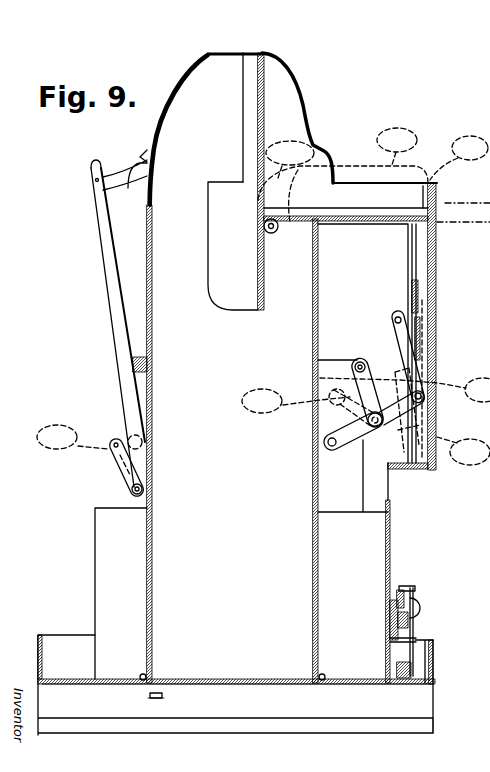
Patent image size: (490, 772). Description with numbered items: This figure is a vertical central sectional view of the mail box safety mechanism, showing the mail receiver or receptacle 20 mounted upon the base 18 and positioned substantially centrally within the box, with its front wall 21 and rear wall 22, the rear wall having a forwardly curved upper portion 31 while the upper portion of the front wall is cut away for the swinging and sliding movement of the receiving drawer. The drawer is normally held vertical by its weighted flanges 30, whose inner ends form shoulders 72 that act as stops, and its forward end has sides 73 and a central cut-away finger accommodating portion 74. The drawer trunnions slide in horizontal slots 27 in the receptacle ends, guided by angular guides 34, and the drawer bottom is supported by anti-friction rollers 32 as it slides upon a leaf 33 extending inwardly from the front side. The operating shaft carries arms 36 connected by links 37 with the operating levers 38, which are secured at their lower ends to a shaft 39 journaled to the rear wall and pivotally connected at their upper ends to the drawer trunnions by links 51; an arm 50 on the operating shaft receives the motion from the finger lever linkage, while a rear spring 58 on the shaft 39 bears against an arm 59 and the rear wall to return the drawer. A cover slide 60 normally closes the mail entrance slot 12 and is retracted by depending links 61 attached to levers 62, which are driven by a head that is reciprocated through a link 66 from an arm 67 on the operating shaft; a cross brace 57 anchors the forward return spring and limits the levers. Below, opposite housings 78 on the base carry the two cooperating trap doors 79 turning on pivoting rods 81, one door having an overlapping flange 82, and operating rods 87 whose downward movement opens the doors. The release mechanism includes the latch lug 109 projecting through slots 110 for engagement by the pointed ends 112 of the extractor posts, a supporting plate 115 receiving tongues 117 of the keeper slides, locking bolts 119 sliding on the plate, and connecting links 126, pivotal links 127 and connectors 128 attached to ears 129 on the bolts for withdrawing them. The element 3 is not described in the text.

The machine 3 is at (405, 390).
The mail entrance slot 12 is at (437, 214).
The base 18 is at (480, 676).
The mail receiver or receptacle 20 is at (206, 248).
The front wall 21 is at (315, 573).
The rear wall 22 is at (153, 611).
The horizontal slots 27 is at (363, 212).
The weighted sides or flanges 30 is at (397, 146).
The forwardly curved upper portion 31 is at (189, 73).
The anti-friction rollers 32 is at (270, 235).
The leaf 33 is at (302, 225).
The angular guides 34 is at (372, 228).
The arms 36 is at (368, 363).
The links 37 is at (146, 360).
The operating levers 38 is at (102, 262).
The shaft 39 is at (128, 492).
The arm 50 is at (345, 448).
The links 51 is at (112, 187).
The cross brace 57 is at (428, 470).
The rear spring 58 is at (89, 437).
The arm 59 is at (113, 460).
The cover slide 60 is at (416, 236).
The depending links 61 is at (418, 295).
The levers 62 is at (420, 322).
The link 66 is at (412, 375).
The arm 67 is at (422, 417).
The shoulders 72 is at (213, 182).
The sides 73 is at (242, 110).
The central cut-away finger accommodating portion 74 is at (263, 72).
The housings 78 is at (121, 593).
The trap doors 79 is at (205, 680).
The pivoting rods 81 is at (140, 677).
The flange 82 is at (240, 688).
The operating rods 87 is at (415, 732).
The lug 109 is at (152, 697).
The slots 110 is at (168, 697).
The forward pointed ends 112 is at (461, 716).
The supporting plate 115 is at (388, 595).
The tongues 117 is at (420, 610).
The locking bolts 119 is at (398, 618).
The connecting links 126 is at (418, 668).
The pivotal links 127 is at (415, 632).
The connectors 128 is at (402, 588).
The ears 129 is at (393, 585).